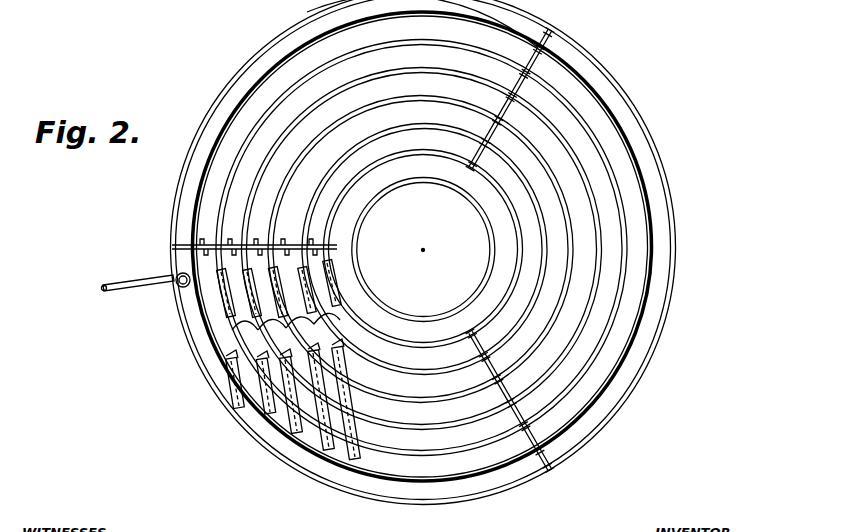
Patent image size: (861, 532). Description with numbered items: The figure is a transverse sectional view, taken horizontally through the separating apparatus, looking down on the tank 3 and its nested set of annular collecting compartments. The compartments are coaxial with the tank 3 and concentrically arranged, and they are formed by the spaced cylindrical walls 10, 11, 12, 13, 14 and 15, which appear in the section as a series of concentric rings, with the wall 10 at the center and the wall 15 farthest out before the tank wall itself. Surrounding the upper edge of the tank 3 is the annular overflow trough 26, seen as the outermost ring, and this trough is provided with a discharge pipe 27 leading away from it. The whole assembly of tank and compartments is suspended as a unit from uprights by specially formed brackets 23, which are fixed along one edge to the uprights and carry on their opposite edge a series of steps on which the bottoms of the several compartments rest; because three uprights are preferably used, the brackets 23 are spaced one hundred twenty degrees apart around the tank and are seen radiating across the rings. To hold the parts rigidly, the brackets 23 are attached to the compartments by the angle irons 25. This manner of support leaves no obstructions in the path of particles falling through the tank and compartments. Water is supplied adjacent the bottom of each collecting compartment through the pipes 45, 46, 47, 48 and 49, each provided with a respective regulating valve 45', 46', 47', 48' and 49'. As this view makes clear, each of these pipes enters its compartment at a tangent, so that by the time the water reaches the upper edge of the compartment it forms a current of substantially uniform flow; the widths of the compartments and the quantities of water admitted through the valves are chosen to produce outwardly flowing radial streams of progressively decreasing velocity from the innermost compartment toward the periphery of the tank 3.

The tank 3 is at (345, 27).
The cylindrical wall 10 is at (473, 200).
The cylindrical wall 11 is at (363, 180).
The cylindrical wall 12 is at (427, 133).
The cylindrical wall 13 is at (333, 133).
The cylindrical wall 14 is at (377, 77).
The cylindrical wall 15 is at (308, 83).
The bracket 23 is at (172, 247).
The angle iron 25 is at (537, 72).
The annular overflow trough 26 is at (265, 62).
The discharge pipe 27 is at (143, 278).
The water supply pipe 45 is at (304, 432).
The water supply pipe 46 is at (274, 426).
The water supply pipe 47 is at (245, 420).
The water supply pipe 48 is at (217, 411).
The water supply pipe 49 is at (186, 399).
The regulating valve 45' is at (221, 287).
The regulating valve 46' is at (185, 300).
The regulating valve 47' is at (187, 310).
The regulating valve 48' is at (150, 324).
The regulating valve 49' is at (154, 334).